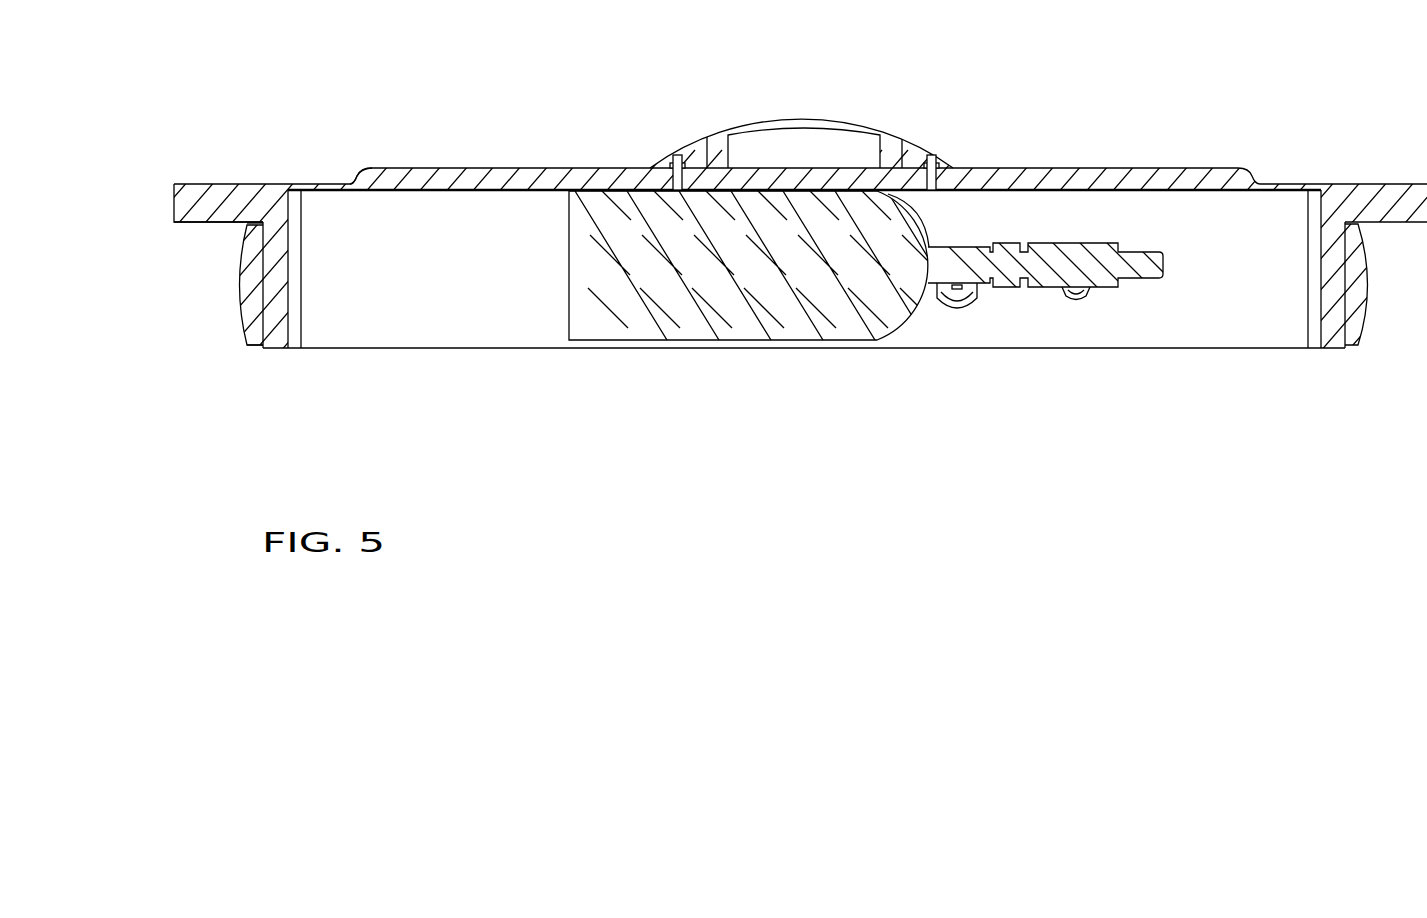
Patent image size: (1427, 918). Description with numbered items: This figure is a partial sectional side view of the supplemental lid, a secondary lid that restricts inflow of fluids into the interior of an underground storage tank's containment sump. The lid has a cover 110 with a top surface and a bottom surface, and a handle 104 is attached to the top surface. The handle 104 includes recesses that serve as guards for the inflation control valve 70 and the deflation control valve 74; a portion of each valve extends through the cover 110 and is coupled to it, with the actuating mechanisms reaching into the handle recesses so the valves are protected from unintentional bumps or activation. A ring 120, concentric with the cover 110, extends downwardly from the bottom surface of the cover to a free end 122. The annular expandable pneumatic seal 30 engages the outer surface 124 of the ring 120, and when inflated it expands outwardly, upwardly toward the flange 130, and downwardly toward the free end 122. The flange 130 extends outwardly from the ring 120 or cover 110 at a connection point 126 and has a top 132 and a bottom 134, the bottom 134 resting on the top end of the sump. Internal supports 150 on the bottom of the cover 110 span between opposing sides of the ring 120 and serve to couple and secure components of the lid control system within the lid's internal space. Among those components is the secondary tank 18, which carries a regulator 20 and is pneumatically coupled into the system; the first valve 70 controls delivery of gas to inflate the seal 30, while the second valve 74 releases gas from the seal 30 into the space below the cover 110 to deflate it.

The secondary tank 18 is at (790, 315).
The regulator 20 is at (1010, 280).
The annular expandable pneumatic seal 30 is at (253, 288).
The inflation control valve 70 is at (673, 158).
The deflation control valve 74 is at (937, 158).
The handle 104 is at (799, 123).
The cover 110 is at (457, 180).
The ring 120 is at (275, 327).
The free end 122 is at (272, 348).
The outer surface 124 is at (263, 347).
The connection point 126 is at (248, 225).
The flange 130 is at (305, 183).
The top 132 is at (227, 192).
The bottom 134 is at (197, 222).
The internal supports 150 is at (420, 310).